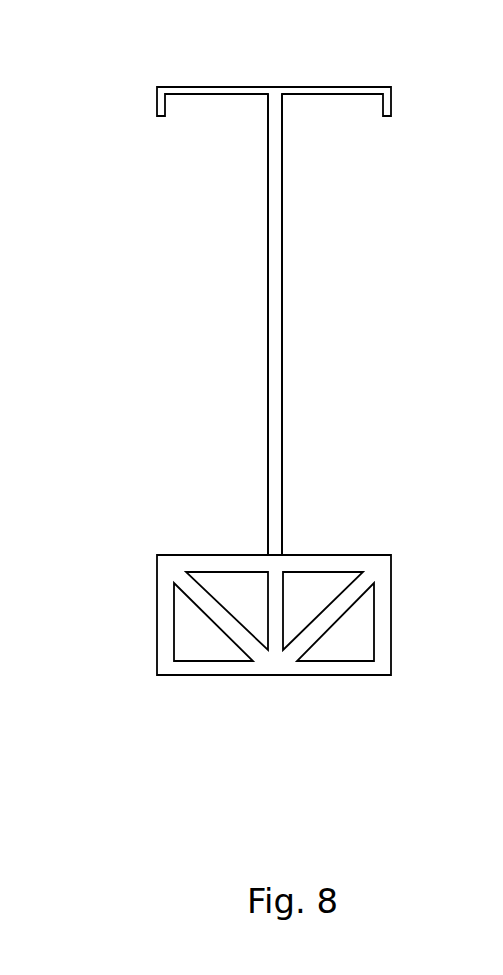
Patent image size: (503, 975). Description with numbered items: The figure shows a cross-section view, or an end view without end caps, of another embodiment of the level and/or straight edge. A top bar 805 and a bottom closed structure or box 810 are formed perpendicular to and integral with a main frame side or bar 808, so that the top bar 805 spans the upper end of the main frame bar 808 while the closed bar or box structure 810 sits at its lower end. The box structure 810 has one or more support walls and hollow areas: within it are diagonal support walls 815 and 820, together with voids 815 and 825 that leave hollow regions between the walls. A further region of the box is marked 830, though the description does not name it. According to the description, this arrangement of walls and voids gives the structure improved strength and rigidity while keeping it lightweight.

The top bar 805 is at (307, 87).
The main frame side or bar 808 is at (275, 258).
The bottom closed structure or box 810 is at (411, 557).
The diagonal support wall 815 is at (222, 622).
The diagonal support wall 820 is at (313, 637).
The void 825 is at (240, 582).
The lower triangular section 830 is at (223, 652).